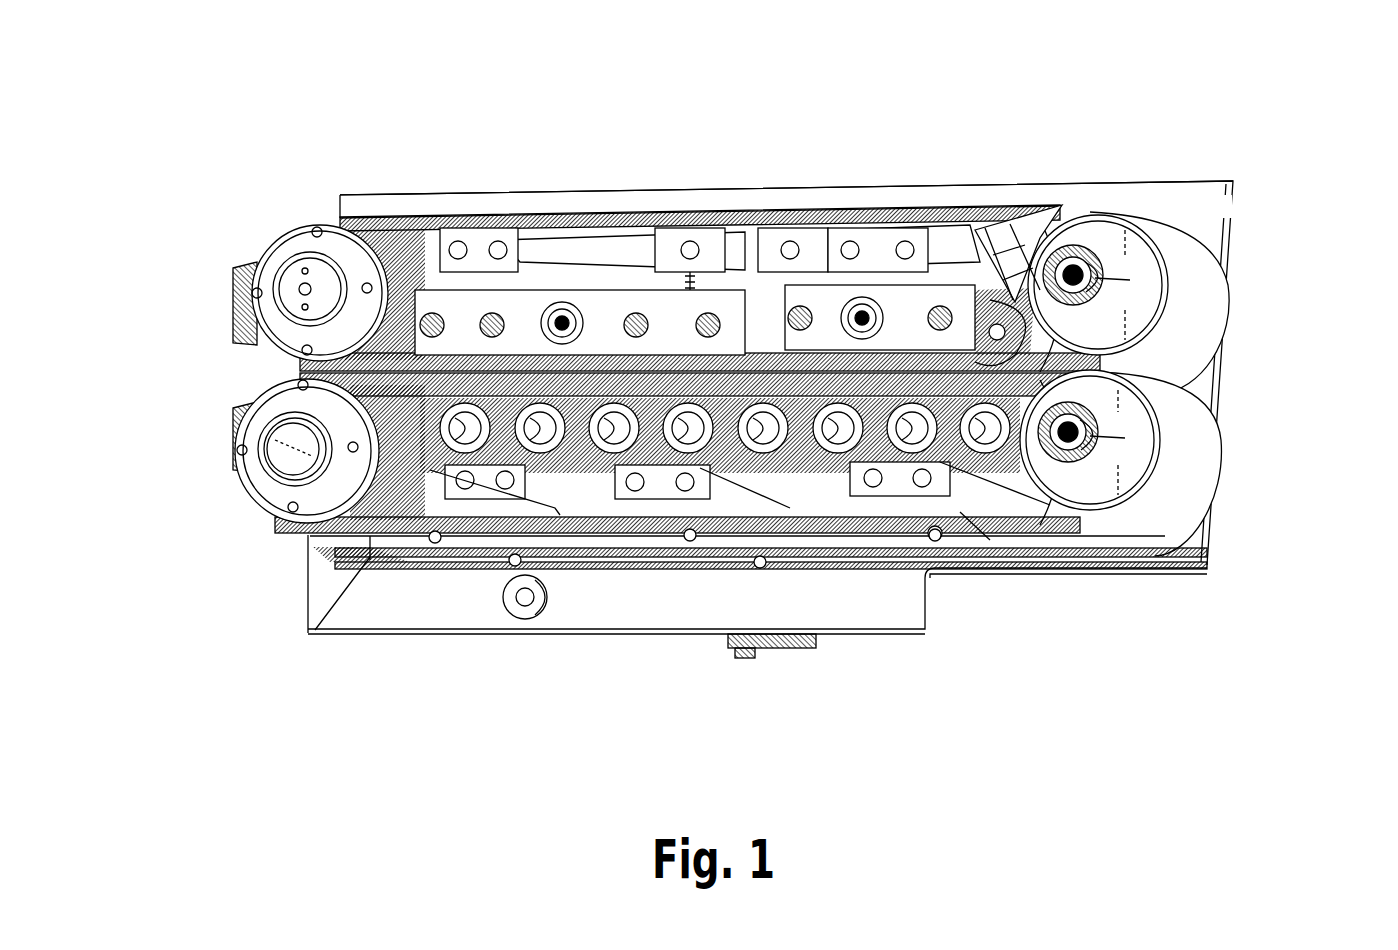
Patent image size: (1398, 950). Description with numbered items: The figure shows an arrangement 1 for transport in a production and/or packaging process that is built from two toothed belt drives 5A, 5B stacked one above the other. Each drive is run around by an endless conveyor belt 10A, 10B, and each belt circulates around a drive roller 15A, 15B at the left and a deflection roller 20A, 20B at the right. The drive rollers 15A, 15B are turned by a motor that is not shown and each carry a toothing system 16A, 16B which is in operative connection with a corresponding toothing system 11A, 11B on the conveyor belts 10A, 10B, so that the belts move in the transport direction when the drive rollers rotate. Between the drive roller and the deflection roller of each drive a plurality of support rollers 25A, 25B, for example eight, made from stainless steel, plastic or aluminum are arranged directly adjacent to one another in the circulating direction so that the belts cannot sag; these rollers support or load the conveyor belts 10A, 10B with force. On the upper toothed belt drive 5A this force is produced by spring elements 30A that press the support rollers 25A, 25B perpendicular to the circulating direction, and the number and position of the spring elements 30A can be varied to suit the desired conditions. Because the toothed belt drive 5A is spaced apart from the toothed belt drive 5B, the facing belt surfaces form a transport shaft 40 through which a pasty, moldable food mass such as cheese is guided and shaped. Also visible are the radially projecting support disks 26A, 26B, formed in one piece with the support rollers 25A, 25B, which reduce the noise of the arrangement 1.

The arrangement 1 is at (368, 118).
The toothed belt drive 5A is at (611, 235).
The toothed belt drive 5B is at (572, 447).
The conveyor belt 10A is at (600, 350).
The conveyor belt 10B is at (548, 536).
The toothing system 11A is at (562, 228).
The toothing system 11B is at (330, 402).
The drive roller 15A is at (295, 226).
The drive roller 15B is at (268, 495).
The toothing system 16A is at (400, 230).
The toothing system 16B is at (315, 633).
The deflection roller 20A is at (1212, 308).
The deflection roller 20B is at (1130, 462).
The support rollers 25A is at (1032, 282).
The support rollers 25B is at (940, 575).
The support disks 26A is at (997, 265).
The support disks 26B is at (980, 490).
The spring elements 30A is at (700, 300).
The transport shaft 40 is at (332, 374).